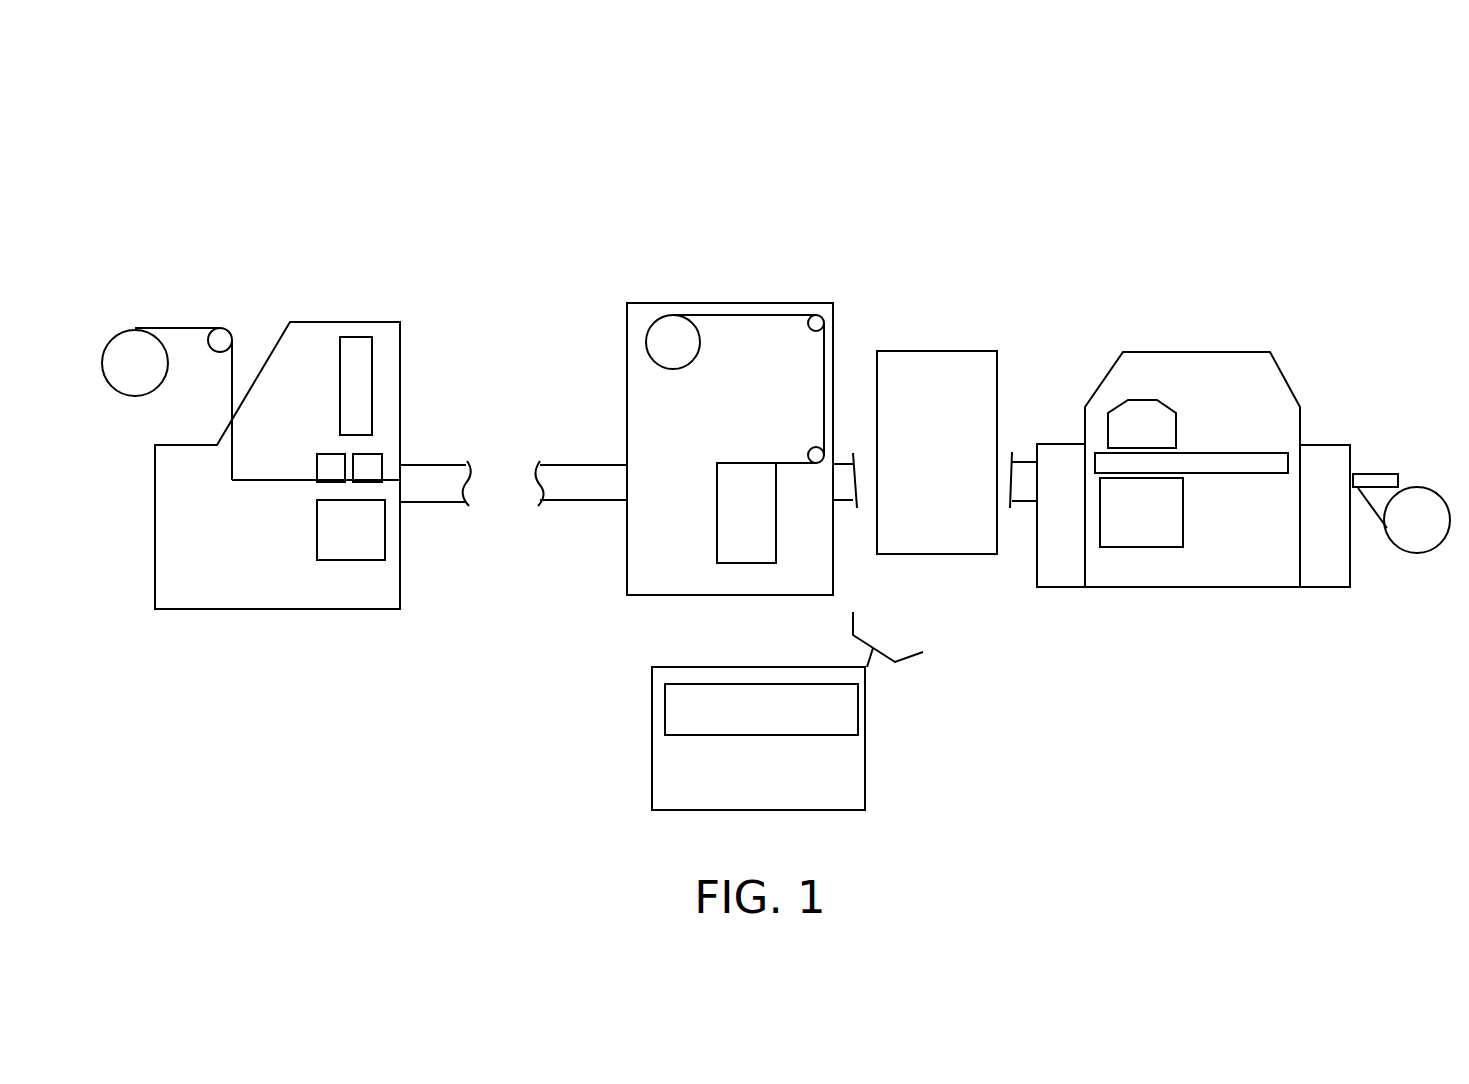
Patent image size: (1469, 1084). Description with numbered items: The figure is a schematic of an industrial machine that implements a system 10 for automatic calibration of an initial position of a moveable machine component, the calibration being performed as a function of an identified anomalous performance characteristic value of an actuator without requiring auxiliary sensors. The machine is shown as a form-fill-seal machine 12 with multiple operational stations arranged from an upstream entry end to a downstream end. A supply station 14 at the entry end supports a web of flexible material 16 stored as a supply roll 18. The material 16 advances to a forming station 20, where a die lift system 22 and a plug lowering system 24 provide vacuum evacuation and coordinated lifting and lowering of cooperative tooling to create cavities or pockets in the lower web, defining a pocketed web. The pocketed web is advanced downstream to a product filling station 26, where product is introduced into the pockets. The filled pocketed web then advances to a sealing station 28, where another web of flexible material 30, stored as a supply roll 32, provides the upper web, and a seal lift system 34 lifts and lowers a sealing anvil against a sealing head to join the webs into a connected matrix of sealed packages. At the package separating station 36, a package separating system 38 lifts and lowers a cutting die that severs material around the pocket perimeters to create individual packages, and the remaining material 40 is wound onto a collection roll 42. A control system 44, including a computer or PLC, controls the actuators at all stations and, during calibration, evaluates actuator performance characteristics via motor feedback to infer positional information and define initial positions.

The system 10 is at (1068, 625).
The machine 12 is at (878, 167).
The supply station 14 is at (1411, 386).
The web of flexible material 16 is at (1417, 483).
The supply roll 18 is at (1427, 508).
The forming station 20 is at (1193, 439).
The die lift system 22 is at (1142, 551).
The plug lowering system 24 is at (1126, 400).
The product filling station 26 is at (938, 337).
The sealing station 28 is at (697, 433).
The web of flexible material 30 is at (701, 312).
The supply roll 32 is at (663, 329).
The seal lift system 34 is at (745, 556).
The package separating station 36 is at (283, 442).
The package separating system 38 is at (363, 549).
The remaining material 40 is at (172, 328).
The collection roll 42 is at (130, 350).
The control system 44 is at (667, 773).